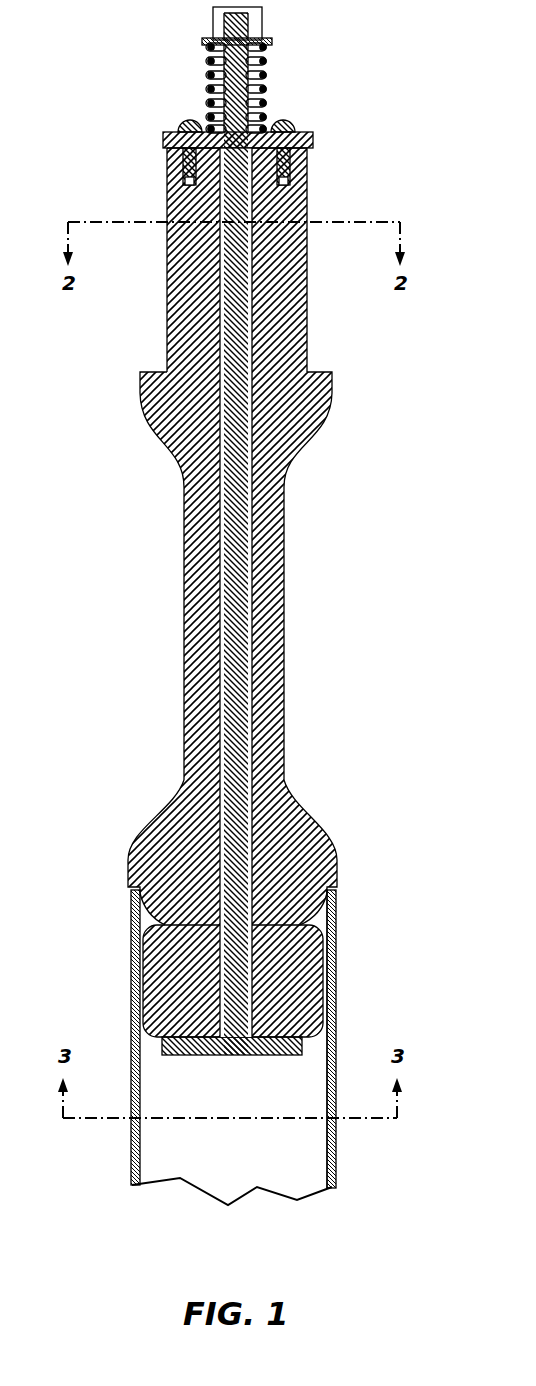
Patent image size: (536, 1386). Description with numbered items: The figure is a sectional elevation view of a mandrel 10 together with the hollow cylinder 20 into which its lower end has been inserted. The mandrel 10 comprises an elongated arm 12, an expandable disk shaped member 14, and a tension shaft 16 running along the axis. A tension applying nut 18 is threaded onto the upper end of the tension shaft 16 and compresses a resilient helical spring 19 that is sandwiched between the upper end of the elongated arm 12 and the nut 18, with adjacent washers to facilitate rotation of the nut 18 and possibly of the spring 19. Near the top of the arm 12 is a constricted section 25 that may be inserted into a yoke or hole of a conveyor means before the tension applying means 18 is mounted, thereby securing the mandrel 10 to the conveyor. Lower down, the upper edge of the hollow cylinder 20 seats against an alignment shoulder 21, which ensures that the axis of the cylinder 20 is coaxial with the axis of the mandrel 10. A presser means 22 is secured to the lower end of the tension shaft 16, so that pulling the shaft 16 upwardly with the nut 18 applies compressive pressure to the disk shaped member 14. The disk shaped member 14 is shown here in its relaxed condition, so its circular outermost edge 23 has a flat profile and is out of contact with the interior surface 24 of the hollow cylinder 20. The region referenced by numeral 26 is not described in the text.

The mandrel 10 is at (445, 135).
The elongated arm 12 is at (283, 565).
The expandable disk shaped member 14 is at (142, 990).
The tension shaft 16 is at (228, 594).
The tension applying nut 18 is at (253, 23).
The resilient helical spring 19 is at (258, 90).
The hollow cylinder 20 is at (333, 990).
The alignment shoulder 21 is at (335, 897).
The presser means 22 is at (245, 1058).
The circular outermost edge 23 is at (330, 1003).
The interior surface 24 is at (323, 1167).
The constricted section 25 is at (307, 200).
The shoulder 26 is at (318, 368).